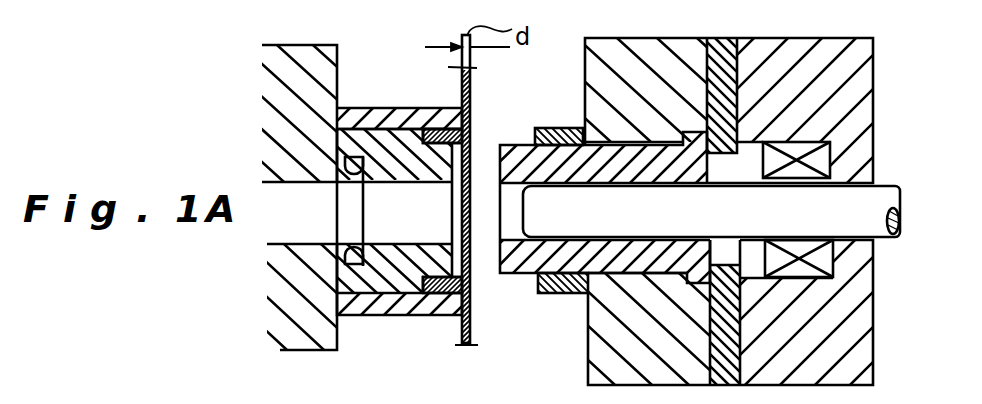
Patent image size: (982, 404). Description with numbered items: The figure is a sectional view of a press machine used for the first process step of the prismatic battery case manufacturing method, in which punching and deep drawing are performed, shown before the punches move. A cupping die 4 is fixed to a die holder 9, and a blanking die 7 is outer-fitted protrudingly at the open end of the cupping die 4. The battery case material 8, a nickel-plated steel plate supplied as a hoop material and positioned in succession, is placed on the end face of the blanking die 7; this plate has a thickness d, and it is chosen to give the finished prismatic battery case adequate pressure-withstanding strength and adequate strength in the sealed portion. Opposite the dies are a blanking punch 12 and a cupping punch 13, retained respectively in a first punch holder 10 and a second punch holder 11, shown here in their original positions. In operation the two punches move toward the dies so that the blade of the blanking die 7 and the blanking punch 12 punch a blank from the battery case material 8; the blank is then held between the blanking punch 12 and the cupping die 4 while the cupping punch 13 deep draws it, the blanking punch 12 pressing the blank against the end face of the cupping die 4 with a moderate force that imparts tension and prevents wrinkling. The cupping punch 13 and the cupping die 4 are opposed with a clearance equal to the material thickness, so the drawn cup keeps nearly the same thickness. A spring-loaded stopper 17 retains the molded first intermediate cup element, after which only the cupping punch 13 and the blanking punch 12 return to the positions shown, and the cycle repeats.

The cupping die 4 is at (408, 314).
The blanking die 7 is at (460, 296).
The battery case material 8 is at (470, 93).
The die holder 9 is at (337, 68).
The first punch holder 10 is at (606, 356).
The second punch holder 11 is at (845, 86).
The blanking punch 12 is at (550, 296).
The cupping punch 13 is at (572, 205).
The stopper 17 is at (347, 260).